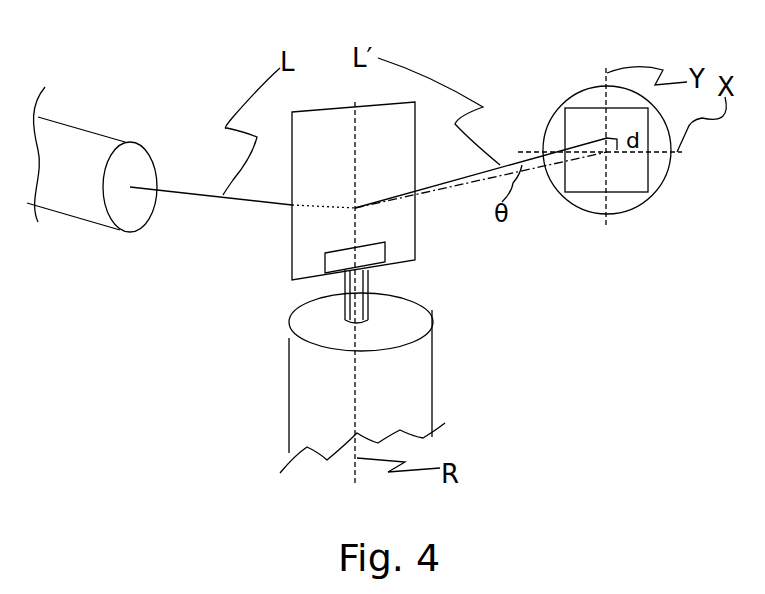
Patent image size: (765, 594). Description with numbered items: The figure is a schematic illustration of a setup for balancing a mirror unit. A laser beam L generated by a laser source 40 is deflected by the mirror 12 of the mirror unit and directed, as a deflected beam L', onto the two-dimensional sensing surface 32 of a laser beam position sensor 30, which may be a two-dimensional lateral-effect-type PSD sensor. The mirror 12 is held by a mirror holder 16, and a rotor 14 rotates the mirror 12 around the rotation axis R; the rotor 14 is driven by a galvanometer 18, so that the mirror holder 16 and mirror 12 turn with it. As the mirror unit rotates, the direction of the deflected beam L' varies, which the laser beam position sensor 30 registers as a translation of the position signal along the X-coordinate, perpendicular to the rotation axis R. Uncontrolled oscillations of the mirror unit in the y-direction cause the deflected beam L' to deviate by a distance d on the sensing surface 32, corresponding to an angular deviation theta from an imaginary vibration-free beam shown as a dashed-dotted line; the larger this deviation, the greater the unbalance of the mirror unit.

The laser source 40 is at (128, 141).
The mirror 12 is at (195, 270).
The mirror holder 16 is at (385, 255).
The rotor 14 is at (345, 297).
The galvanometer 18 is at (400, 308).
The laser beam position sensor 30 is at (638, 228).
The 2d sensing surface 32 is at (563, 107).